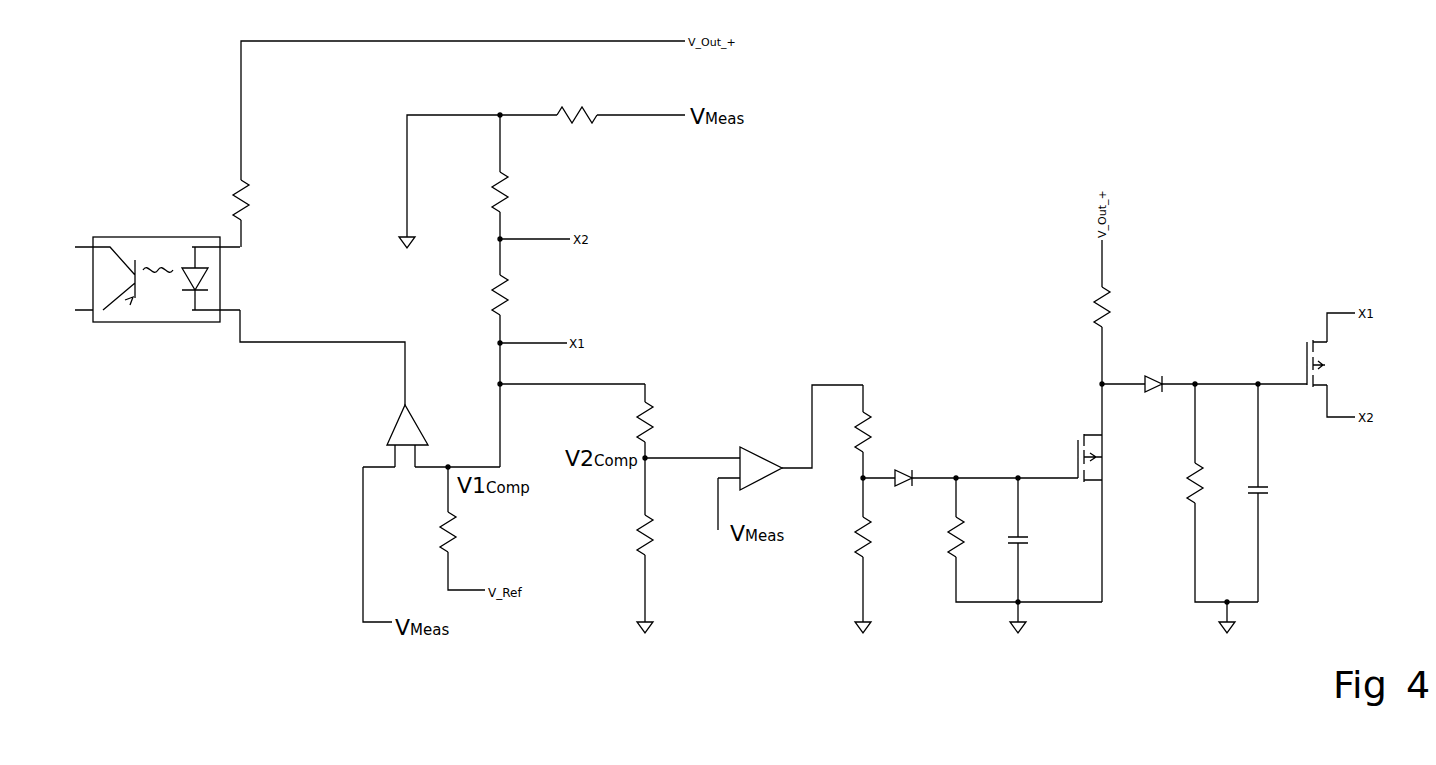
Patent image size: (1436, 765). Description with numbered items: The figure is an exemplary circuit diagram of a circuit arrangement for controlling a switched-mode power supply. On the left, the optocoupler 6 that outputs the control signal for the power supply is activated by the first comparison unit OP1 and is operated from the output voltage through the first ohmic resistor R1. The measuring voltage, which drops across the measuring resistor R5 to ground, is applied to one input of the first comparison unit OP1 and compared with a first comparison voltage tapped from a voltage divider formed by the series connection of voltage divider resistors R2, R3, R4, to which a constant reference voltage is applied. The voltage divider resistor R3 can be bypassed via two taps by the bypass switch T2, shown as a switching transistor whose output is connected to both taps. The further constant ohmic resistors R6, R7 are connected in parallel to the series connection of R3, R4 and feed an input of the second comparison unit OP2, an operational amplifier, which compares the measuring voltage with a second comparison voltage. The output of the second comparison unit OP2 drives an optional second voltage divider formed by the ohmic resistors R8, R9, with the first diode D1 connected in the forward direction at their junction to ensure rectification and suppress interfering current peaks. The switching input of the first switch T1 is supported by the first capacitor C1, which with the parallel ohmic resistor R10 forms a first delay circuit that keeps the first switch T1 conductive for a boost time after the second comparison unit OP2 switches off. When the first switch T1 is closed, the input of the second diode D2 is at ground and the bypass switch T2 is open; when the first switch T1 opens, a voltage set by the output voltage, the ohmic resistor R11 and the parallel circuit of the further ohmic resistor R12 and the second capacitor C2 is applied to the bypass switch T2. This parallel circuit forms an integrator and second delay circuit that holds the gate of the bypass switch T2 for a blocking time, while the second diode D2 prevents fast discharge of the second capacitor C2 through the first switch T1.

The optocoupler 6 is at (142, 237).
The first ohmic resistor R1 is at (250, 200).
The voltage divider resistor R2 is at (458, 532).
The voltage divider resistor R3 is at (510, 295).
The voltage divider resistor R4 is at (510, 192).
The measuring resistor R5 is at (577, 106).
The further constant ohmic resistor R6 is at (655, 422).
The further constant ohmic resistor R7 is at (655, 535).
The ohmic resistor R8 is at (873, 432).
The ohmic resistor R9 is at (873, 537).
The ohmic resistor R10 is at (970, 537).
The ohmic resistor R11 is at (1116, 307).
The further ohmic resistor R12 is at (1209, 483).
The first capacitor C1 is at (1024, 531).
The second capacitor C2 is at (1263, 481).
The first diode D1 is at (903, 470).
The second diode D2 is at (1153, 376).
The first switch T1 is at (1101, 458).
The bypass switch T2 is at (1327, 363).
The first comparison unit OP1 is at (403, 434).
The second comparison unit OP2 is at (751, 472).